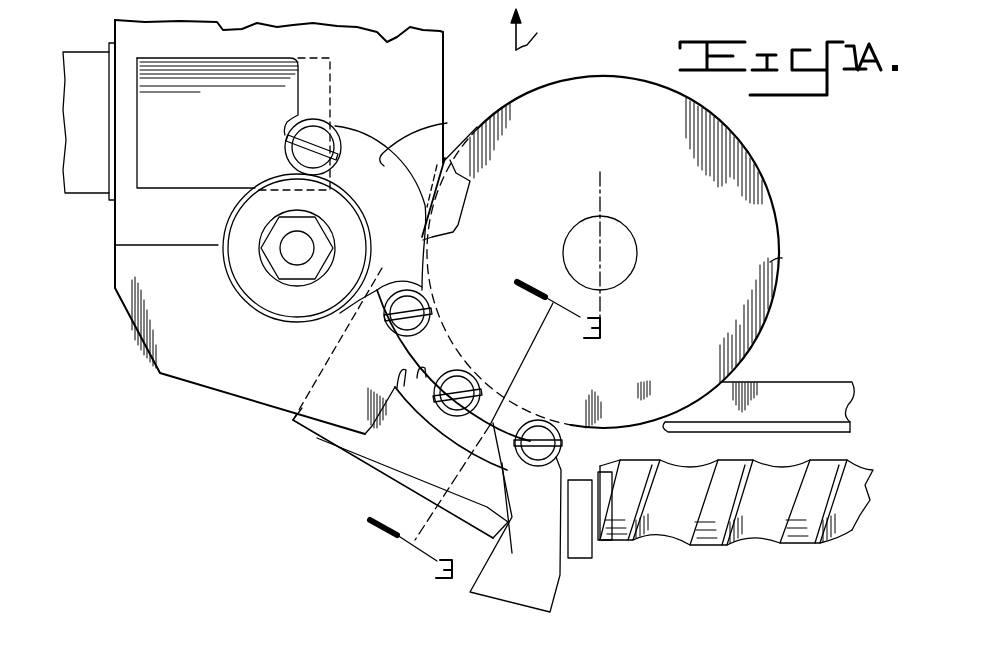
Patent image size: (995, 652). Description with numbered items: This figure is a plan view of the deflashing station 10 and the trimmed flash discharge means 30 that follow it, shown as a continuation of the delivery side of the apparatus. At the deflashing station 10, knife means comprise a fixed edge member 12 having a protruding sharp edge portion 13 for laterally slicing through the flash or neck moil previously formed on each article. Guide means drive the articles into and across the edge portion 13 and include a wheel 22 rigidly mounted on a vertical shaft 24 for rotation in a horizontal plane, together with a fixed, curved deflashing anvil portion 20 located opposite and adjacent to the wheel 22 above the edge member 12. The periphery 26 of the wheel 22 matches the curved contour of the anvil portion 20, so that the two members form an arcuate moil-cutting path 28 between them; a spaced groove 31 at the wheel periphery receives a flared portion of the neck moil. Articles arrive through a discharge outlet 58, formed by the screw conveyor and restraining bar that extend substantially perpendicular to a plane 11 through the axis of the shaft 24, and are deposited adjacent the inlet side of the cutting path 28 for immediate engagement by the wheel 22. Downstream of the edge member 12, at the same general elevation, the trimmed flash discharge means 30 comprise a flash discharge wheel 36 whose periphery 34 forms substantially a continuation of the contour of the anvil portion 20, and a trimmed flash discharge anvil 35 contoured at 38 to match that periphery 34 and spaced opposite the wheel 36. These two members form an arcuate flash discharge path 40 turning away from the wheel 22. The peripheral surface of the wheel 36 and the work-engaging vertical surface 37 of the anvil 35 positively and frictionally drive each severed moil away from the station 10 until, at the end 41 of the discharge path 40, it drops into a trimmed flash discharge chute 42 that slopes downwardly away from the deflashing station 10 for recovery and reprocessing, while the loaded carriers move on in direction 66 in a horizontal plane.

The deflashing station 10 is at (832, 332).
The plane 11 is at (601, 190).
The edge member 12 is at (397, 460).
The sharp edge portion 13 is at (473, 378).
The deflashing anvil portion 20 is at (317, 438).
The wheel 22 is at (776, 212).
The vertical shaft 24 is at (632, 240).
The periphery 26 is at (778, 258).
The moil-cutting path 28 is at (488, 457).
The trimmed flash discharge means 30 is at (490, 96).
The groove 31 is at (758, 407).
The periphery 34 is at (368, 228).
The trimmed flash discharge anvil 35 is at (430, 63).
The trimmed flash discharge wheel 36 is at (245, 292).
The work-engaging vertical surface 37 is at (438, 121).
The contour 38 is at (363, 132).
The flash discharge path 40 is at (363, 170).
The end 41 is at (298, 110).
The trimmed flash discharge chute 42 is at (170, 70).
The discharge outlet 58 is at (627, 447).
The direction of motion 66 is at (540, 29).